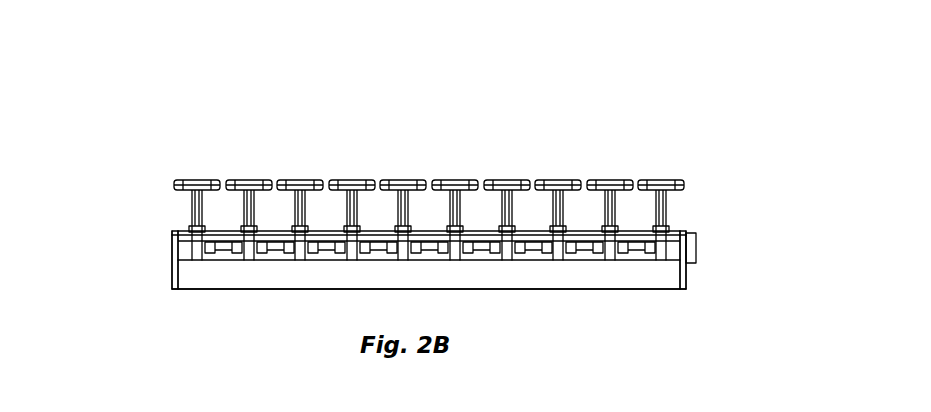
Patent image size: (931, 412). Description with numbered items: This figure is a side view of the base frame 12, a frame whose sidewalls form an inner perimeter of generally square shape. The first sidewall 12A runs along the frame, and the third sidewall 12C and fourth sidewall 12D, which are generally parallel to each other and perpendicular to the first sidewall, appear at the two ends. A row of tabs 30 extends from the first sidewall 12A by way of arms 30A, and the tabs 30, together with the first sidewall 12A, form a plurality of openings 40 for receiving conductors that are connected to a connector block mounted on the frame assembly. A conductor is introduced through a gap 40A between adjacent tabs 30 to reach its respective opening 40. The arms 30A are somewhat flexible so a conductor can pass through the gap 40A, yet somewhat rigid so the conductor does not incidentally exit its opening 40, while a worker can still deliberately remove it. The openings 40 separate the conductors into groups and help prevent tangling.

The base frame 12 is at (644, 315).
The first sidewall 12A is at (205, 280).
The third sidewall 12C is at (696, 250).
The fourth sidewall 12D is at (172, 252).
The tabs 30 is at (689, 118).
The arms 30A is at (685, 207).
The openings 40 is at (323, 217).
The gap 40A is at (636, 174).